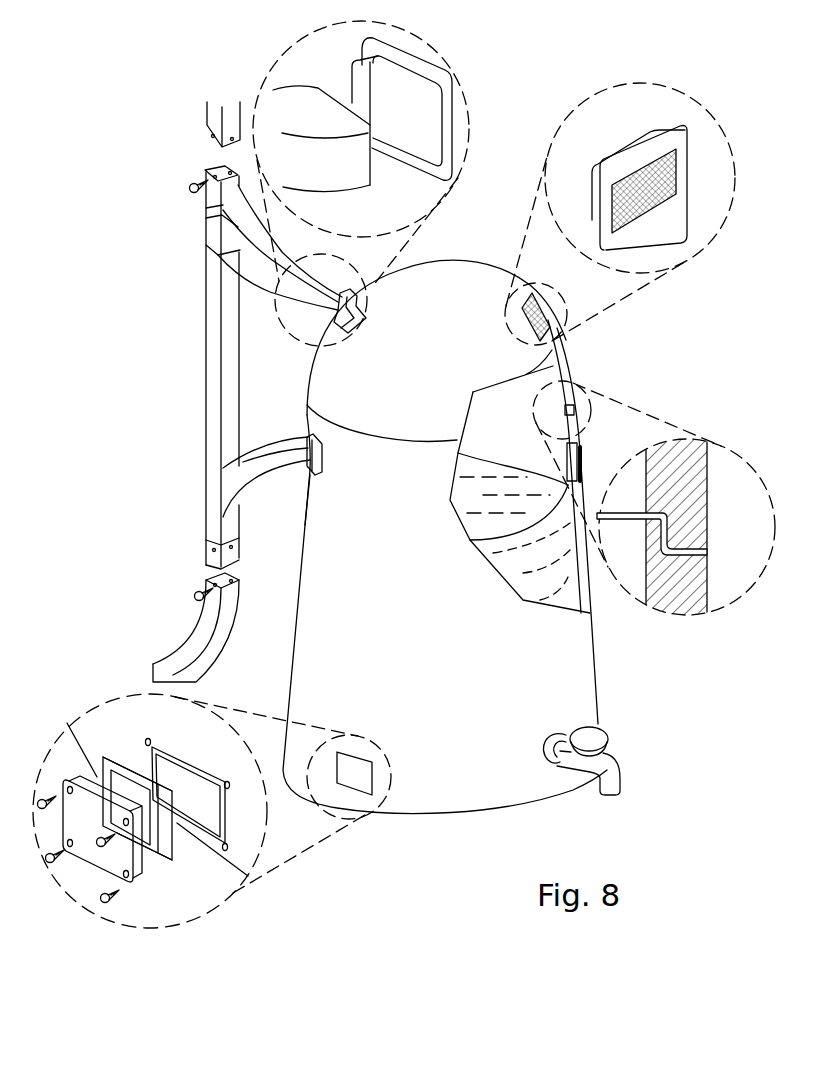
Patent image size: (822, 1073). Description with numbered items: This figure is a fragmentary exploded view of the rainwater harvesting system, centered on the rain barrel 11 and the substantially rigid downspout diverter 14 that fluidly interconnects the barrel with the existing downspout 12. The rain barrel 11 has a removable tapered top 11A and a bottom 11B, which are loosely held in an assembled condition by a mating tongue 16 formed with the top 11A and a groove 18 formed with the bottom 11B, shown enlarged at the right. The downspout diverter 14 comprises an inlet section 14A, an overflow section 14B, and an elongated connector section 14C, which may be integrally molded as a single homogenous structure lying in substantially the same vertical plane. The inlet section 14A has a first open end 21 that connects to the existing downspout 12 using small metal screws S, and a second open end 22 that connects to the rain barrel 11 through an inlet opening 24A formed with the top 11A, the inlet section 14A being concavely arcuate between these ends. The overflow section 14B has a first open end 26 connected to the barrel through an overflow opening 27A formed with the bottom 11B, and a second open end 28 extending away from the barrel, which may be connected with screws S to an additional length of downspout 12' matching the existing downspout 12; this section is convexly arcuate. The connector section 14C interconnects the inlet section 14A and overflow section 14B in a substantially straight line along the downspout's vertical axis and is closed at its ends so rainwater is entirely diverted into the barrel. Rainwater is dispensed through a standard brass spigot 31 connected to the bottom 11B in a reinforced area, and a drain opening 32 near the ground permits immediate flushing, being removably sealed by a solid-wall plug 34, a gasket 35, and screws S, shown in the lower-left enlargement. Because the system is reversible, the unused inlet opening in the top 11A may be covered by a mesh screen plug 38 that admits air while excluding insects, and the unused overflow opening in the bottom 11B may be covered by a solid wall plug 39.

The rain barrel 11 is at (474, 239).
The top 11A is at (443, 340).
The bottom 11B is at (426, 623).
The downspout 12 is at (196, 106).
The additional length of downspout 12' is at (218, 627).
The downspout diverter 14 is at (170, 430).
The inlet section 14A is at (258, 287).
The overflow section 14B is at (273, 467).
The elongated connector section 14C is at (203, 330).
The tongue 16 is at (643, 517).
The groove 18 is at (705, 508).
The first open end 21 is at (206, 167).
The second open end 22 is at (375, 170).
The inlet opening 24A is at (362, 90).
The first open end 26 is at (324, 462).
The overflow opening 27A is at (313, 475).
The second open end 28 is at (206, 560).
The spigot 31 is at (612, 748).
The drain opening 32 is at (172, 758).
The solid-wall plug 34 is at (365, 784).
The gasket 35 is at (178, 853).
The mesh screen plug 38 is at (610, 160).
The solid wall plug 39 is at (587, 462).
The screws S is at (188, 189).